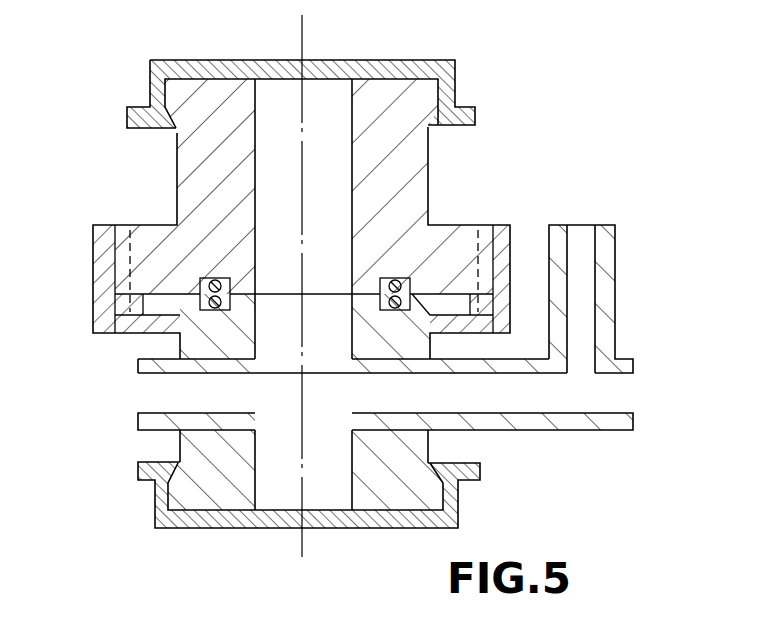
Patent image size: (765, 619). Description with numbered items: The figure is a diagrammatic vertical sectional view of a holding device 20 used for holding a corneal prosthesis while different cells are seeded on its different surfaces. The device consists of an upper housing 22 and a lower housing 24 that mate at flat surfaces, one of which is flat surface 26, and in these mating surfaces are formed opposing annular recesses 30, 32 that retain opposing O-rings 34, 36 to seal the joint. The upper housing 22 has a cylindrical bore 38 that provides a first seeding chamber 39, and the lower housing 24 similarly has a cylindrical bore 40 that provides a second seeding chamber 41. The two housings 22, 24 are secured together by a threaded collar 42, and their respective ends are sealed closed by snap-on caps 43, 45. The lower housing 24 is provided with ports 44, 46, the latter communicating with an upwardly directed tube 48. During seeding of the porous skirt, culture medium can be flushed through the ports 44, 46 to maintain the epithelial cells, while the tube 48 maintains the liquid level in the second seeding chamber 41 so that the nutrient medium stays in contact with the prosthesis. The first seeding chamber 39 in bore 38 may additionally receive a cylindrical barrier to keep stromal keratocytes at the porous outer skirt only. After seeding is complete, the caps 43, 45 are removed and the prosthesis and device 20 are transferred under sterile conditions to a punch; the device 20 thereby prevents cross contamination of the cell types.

The holding device 20 is at (527, 125).
The upper housing 22 is at (430, 190).
The lower housing 24 is at (178, 440).
The flat surface 26 is at (262, 316).
The annular recess 30 is at (257, 214).
The annular recess 32 is at (400, 311).
The O-ring 34 is at (410, 291).
The O-ring 36 is at (383, 308).
The cylindrical bore 38 is at (386, 278).
The first seeding chamber 39 is at (292, 95).
The cylindrical bore 40 is at (253, 330).
The second seeding chamber 41 is at (286, 472).
The threaded collar 42 is at (93, 260).
The snap-on cap 43 is at (455, 61).
The port 44 is at (163, 373).
The snap-on cap 45 is at (460, 527).
The port 46 is at (510, 413).
The tube 48 is at (615, 262).